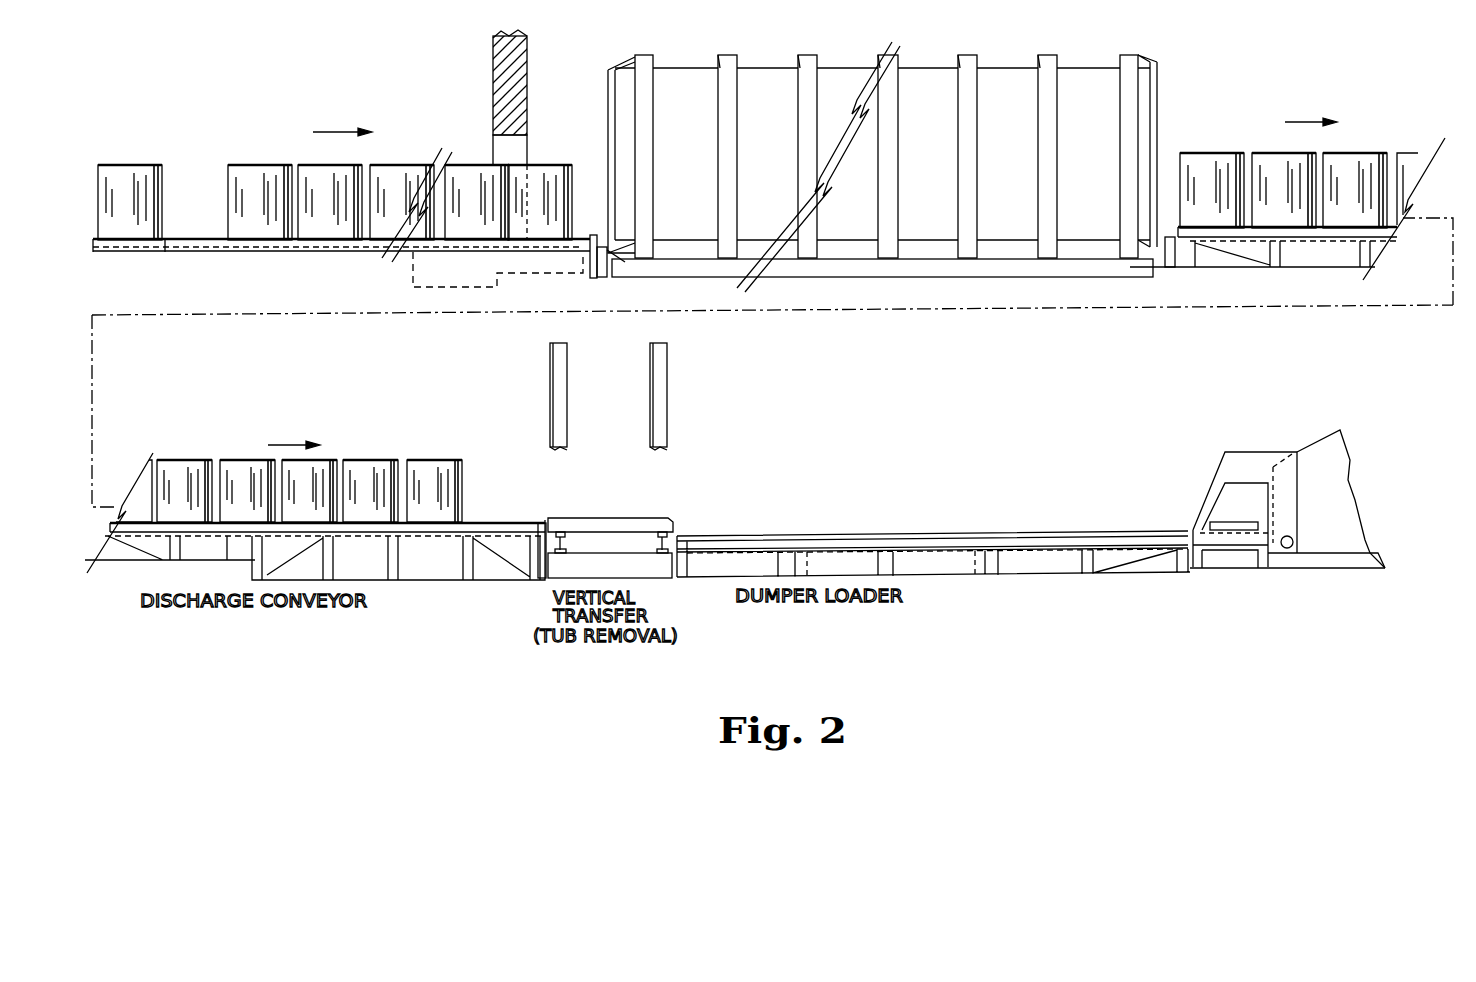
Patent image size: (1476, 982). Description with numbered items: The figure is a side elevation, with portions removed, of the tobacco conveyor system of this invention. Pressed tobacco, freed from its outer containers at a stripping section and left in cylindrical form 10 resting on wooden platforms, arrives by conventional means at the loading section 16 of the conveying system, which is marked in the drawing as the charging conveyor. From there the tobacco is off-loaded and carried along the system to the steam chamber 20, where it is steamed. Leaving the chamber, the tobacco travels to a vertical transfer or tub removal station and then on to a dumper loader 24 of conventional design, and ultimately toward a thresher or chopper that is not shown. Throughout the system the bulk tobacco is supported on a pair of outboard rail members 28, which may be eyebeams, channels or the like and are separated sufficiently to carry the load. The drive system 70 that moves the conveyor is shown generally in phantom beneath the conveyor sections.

The cylindrical form 10 is at (265, 151).
The loading section 16 is at (199, 141).
The steam chamber 20 is at (997, 58).
The dumper loader 24 is at (1167, 462).
The outboard rail members 28 is at (369, 254).
The drive system 70 is at (557, 274).